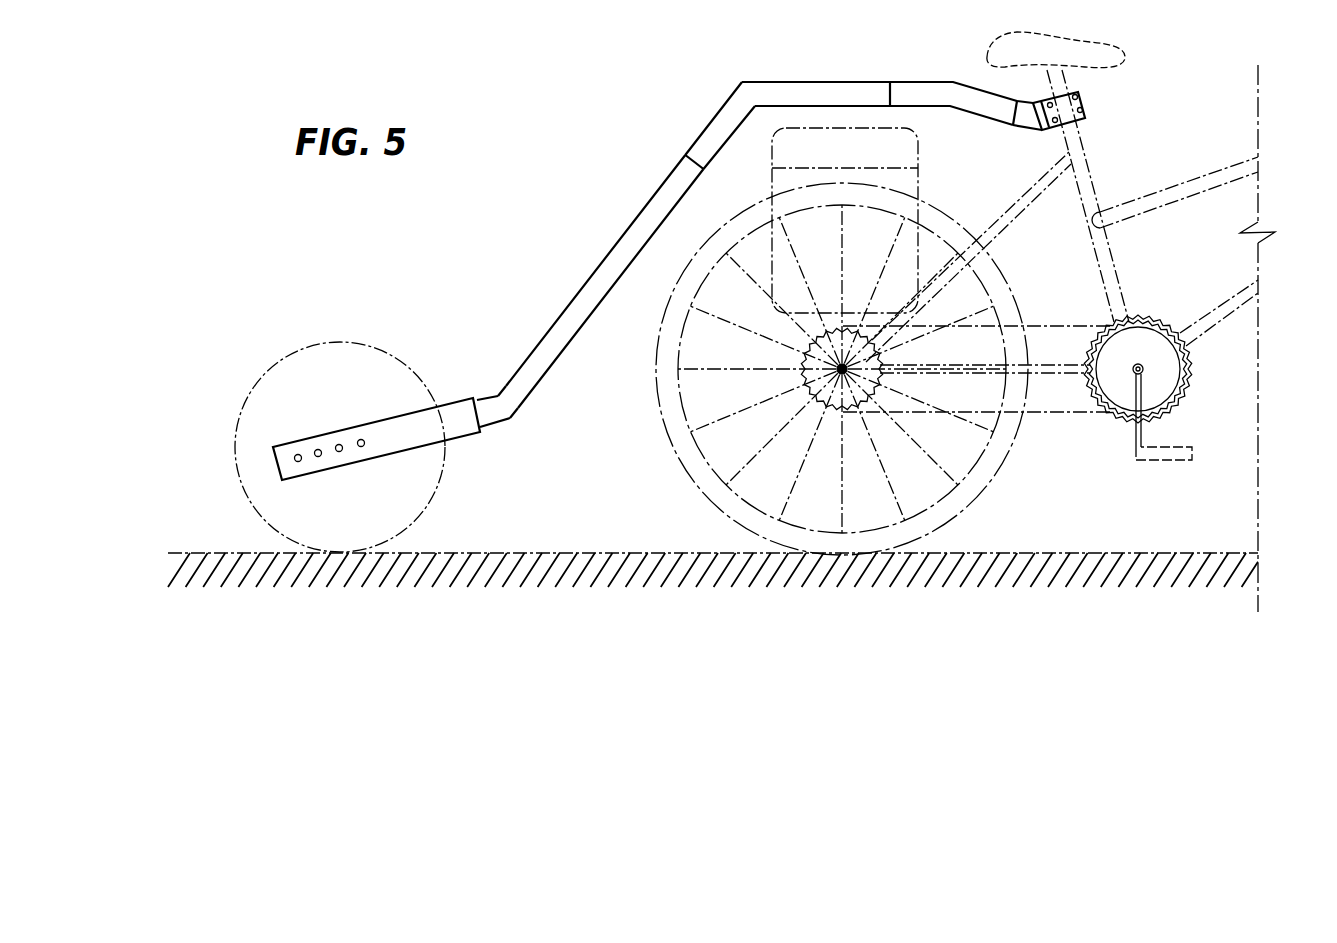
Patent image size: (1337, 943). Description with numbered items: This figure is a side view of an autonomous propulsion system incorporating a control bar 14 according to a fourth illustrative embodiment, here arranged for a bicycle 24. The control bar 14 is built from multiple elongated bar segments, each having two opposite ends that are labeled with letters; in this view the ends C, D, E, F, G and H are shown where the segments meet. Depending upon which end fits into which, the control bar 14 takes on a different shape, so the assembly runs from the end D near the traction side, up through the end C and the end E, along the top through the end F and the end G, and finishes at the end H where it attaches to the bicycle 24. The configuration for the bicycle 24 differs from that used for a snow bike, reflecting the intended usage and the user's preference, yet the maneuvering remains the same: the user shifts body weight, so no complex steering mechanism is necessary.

The control bar 14 is at (679, 259).
The bicycle 24 is at (1132, 197).
The bar segment end C is at (605, 275).
The bar segment end D is at (498, 384).
The bar segment end E is at (720, 125).
The bar segment end F is at (816, 74).
The bar segment end G is at (953, 83).
The bar segment end H is at (1045, 100).